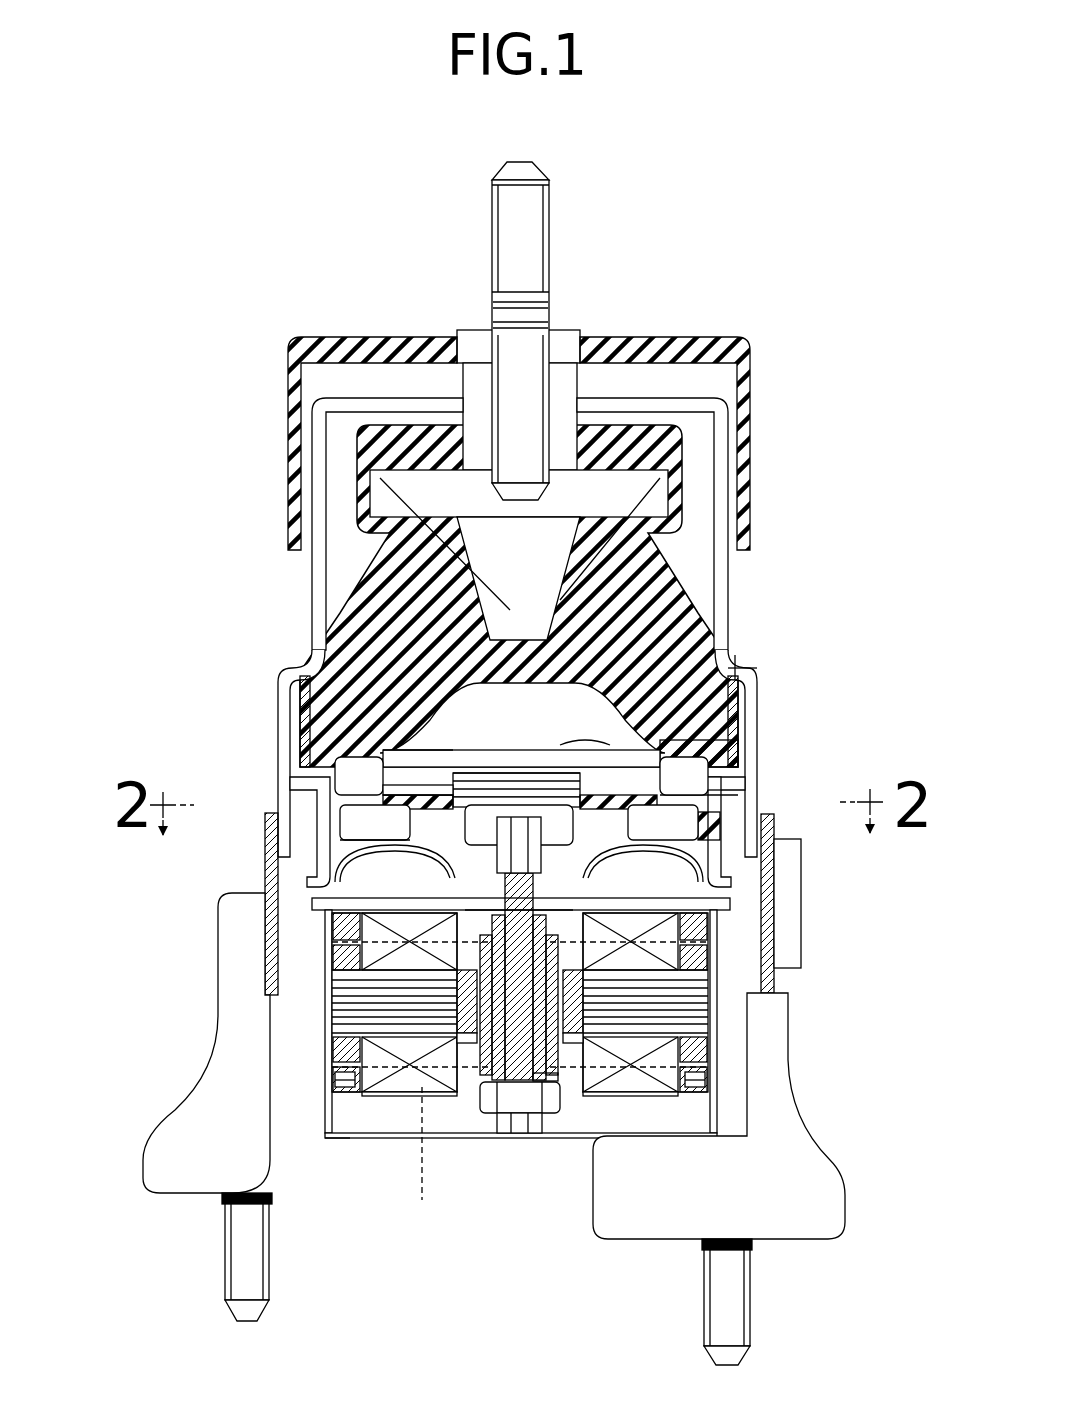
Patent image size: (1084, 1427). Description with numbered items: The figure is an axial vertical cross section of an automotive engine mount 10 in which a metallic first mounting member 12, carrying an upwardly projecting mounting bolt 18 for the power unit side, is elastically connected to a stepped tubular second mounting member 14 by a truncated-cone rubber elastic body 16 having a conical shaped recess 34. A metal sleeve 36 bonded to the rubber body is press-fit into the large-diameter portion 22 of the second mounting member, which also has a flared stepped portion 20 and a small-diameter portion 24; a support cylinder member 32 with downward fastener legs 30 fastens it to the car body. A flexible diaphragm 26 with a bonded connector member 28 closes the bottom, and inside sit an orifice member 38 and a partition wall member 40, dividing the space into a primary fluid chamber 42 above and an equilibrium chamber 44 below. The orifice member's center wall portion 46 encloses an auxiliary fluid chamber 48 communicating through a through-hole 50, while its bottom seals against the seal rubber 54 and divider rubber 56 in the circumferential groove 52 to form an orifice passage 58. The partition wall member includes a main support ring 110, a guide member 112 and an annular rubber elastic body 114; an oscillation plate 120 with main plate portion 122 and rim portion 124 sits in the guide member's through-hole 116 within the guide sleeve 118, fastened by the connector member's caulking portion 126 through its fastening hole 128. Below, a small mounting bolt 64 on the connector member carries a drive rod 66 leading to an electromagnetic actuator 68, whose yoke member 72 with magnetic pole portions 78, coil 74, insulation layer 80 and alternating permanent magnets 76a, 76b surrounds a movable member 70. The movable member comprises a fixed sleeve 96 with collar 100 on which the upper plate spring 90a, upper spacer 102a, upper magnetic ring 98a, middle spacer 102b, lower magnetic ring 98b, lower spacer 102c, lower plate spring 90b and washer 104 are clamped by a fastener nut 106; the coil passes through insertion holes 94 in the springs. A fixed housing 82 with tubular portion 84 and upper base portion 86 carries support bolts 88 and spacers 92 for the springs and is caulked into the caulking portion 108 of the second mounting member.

The engine mount 10 is at (343, 252).
The first mounting member 12 is at (663, 437).
The second mounting member 14 is at (280, 760).
The rubber elastic body 16 is at (700, 640).
The mounting bolt 18 is at (530, 268).
The stepped portion 20 is at (317, 790).
The large-diameter portion 22 is at (293, 727).
The small-diameter portion 24 is at (322, 870).
The flexible diaphragm 26 is at (508, 852).
The connector member 28 is at (500, 808).
The fastener legs 30 is at (206, 1165).
The support cylinder member 32 is at (275, 913).
The conical shaped recess 34 is at (717, 573).
The metal sleeve 36 is at (305, 700).
The orifice member 38 is at (587, 736).
The partition wall member 40 is at (430, 750).
The primary fluid chamber 42 is at (740, 665).
The equilibrium chamber 44 is at (637, 836).
The center wall portion 46 is at (700, 757).
The auxiliary fluid chamber 48 is at (400, 803).
The through-hole 50 is at (428, 751).
The circumferential groove 52 is at (712, 807).
The seal rubber 54 is at (707, 790).
The divider rubber 56 is at (702, 827).
The orifice passage 58 is at (347, 812).
The mounting bolt 64 is at (523, 845).
The drive rod 66 is at (416, 972).
The electromagnetic actuator 68 is at (723, 1132).
The movable member 70 is at (486, 923).
The yoke member 72 is at (719, 1048).
The coil 74 is at (407, 1075).
The permanent magnets 76a is at (340, 1000).
The permanent magnets 76b is at (335, 985).
The magnetic pole portions 78 is at (333, 975).
The electrical insulation layer 80 is at (378, 1094).
The fixed housing 82 is at (330, 1149).
The tubular portion 84 is at (348, 1077).
The upper base portion 86 is at (648, 907).
The support bolts 88 is at (344, 1090).
The upper plate spring 90a is at (600, 930).
The lower plate spring 90b is at (411, 1084).
The spacers 92 is at (664, 968).
The insertion holes 94 is at (382, 926).
The fixed sleeve 96 is at (513, 1096).
The upper magnetic ring 98a is at (462, 1020).
The lower magnetic ring 98b is at (455, 1000).
The collar 100 is at (573, 940).
The upper spacer 102a is at (700, 945).
The middle spacer 102b is at (565, 1035).
The lower spacer 102c is at (549, 1055).
The washer 104 is at (483, 985).
The fastener nut 106 is at (494, 1105).
The caulking portion 108 is at (694, 926).
The main support ring 110 is at (345, 838).
The guide member 112 is at (437, 807).
The annular rubber elastic body 114 is at (392, 790).
The through-hole 116 is at (477, 772).
The guide sleeve 118 is at (752, 672).
The oscillation plate 120 is at (490, 766).
The main plate portion 122 is at (547, 802).
The rim portion 124 is at (584, 741).
The caulking portion 126 is at (530, 772).
The fastening hole 128 is at (513, 769).